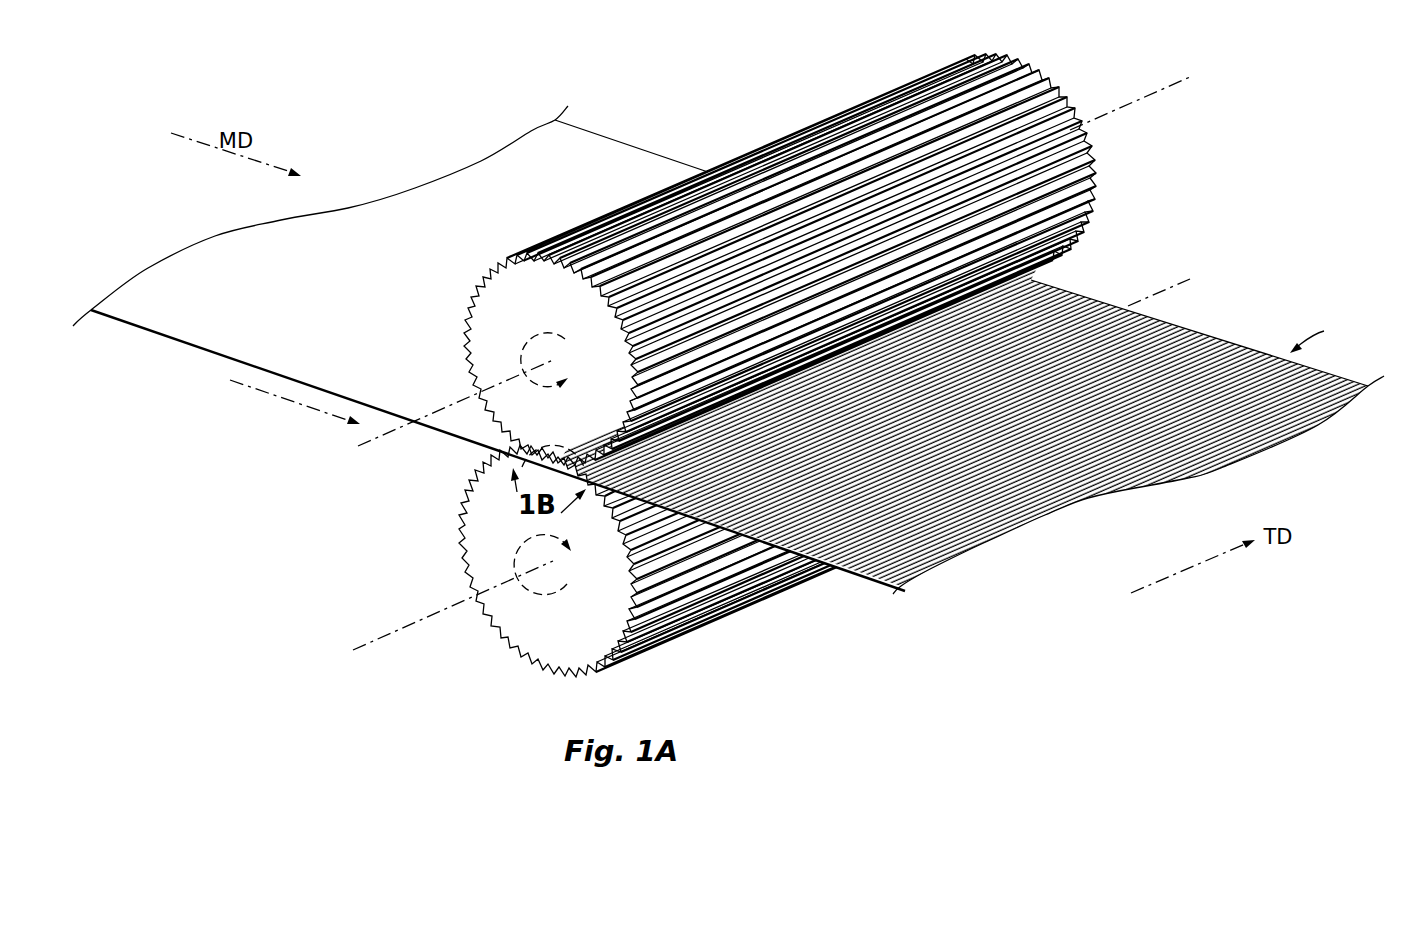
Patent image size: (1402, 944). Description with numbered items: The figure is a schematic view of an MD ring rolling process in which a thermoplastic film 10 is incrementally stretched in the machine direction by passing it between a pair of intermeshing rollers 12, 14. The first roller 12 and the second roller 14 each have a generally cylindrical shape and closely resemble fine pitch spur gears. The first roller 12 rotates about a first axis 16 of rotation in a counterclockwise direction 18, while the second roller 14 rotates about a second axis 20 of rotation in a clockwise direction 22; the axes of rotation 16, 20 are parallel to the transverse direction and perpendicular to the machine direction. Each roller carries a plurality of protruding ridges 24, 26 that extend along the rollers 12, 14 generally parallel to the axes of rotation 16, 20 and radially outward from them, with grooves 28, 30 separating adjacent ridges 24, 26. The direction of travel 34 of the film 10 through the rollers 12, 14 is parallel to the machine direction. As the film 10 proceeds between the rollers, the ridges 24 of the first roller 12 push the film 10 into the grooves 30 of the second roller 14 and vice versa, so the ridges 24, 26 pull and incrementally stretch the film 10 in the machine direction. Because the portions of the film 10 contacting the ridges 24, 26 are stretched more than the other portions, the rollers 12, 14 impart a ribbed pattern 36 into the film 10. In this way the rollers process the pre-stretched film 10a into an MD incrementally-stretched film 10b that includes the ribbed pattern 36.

The thermoplastic film 10 is at (728, 337).
The pre-stretched film 10a is at (592, 145).
The MD incrementally-stretched film 10b is at (1217, 345).
The first roller 12 is at (774, 251).
The second roller 14 is at (755, 479).
The first axis of rotation 16 is at (432, 400).
The counterclockwise direction 18 is at (487, 347).
The second axis of rotation 20 is at (367, 633).
The clockwise direction 22 is at (508, 529).
The ridges of first roller 24 is at (1020, 63).
The ridges of second roller 26 is at (453, 557).
The grooves of first roller 28 is at (1055, 102).
The grooves of second roller 30 is at (453, 520).
The direction of travel 34 is at (295, 402).
The ribbed pattern 36 is at (1321, 334).